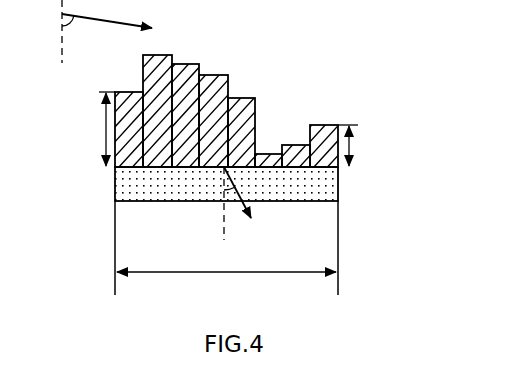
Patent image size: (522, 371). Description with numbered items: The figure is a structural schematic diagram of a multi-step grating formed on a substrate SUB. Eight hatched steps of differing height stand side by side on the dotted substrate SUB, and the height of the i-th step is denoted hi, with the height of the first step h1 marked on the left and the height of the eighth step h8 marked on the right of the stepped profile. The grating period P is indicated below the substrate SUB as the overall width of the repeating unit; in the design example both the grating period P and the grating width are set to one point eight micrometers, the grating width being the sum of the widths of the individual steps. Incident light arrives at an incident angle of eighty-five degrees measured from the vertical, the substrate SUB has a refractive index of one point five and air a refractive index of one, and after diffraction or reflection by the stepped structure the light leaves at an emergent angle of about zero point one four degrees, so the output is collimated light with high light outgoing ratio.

The substrate SUB is at (338, 192).
The height of first grating step h1 is at (100, 129).
The height of eighth grating step h8 is at (358, 145).
The grating period P is at (226, 248).